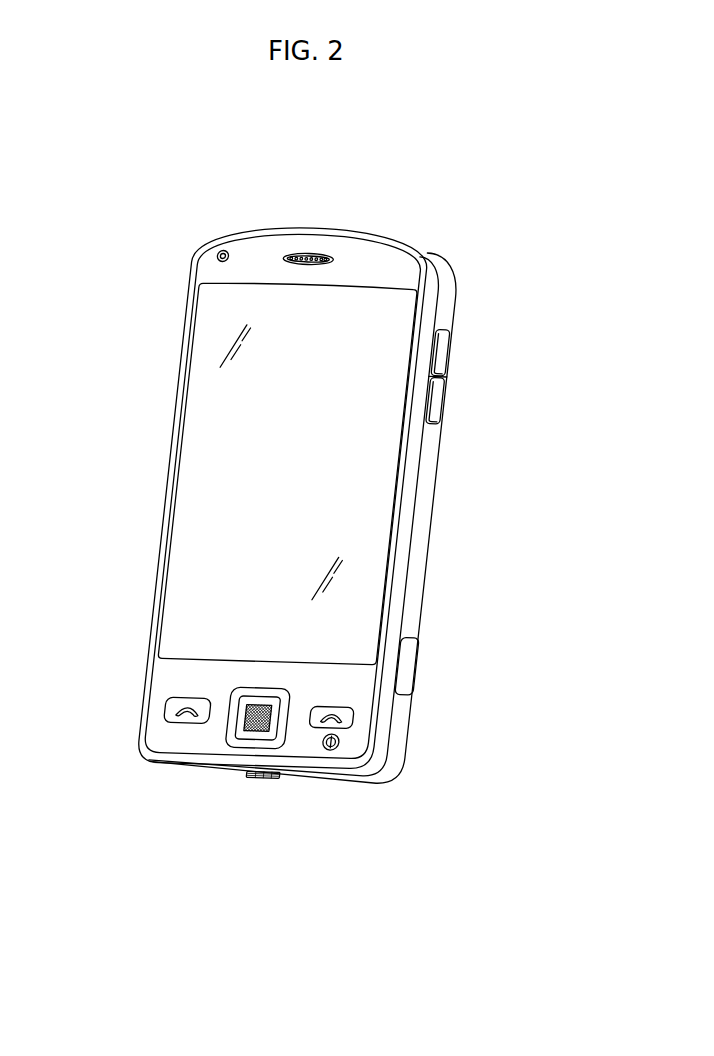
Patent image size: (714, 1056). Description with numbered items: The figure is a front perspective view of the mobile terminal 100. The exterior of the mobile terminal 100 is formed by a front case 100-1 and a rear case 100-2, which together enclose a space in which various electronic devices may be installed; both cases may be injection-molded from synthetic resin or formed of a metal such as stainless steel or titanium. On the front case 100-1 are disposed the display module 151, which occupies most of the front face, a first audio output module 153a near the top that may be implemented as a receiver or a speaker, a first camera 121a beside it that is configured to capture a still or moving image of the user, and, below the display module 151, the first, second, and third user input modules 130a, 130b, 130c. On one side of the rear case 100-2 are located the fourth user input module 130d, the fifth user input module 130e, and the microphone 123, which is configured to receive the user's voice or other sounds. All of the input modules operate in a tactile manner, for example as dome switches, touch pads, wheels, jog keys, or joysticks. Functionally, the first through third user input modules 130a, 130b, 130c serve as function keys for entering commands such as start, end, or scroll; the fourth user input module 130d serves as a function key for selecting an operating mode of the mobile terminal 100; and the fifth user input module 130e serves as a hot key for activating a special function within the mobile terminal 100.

The mobile terminal 100 is at (163, 270).
The front case 100-1 is at (430, 262).
The rear case 100-2 is at (450, 300).
The display module 151 is at (197, 490).
The first camera 121a is at (221, 249).
The first audio output module 153a is at (301, 253).
The first user input module 130a is at (183, 726).
The second user input module 130b is at (247, 737).
The third user input module 130c is at (343, 727).
The fourth user input module 130d is at (447, 373).
The fifth user input module 130e is at (417, 660).
The microphone 123 is at (255, 778).